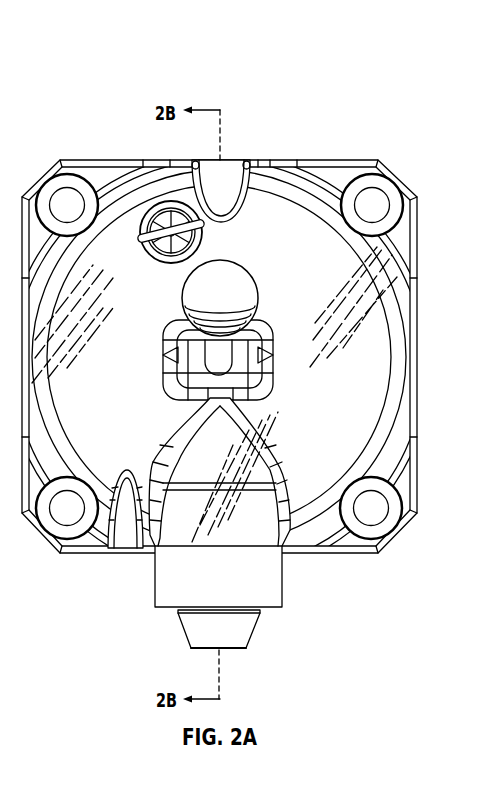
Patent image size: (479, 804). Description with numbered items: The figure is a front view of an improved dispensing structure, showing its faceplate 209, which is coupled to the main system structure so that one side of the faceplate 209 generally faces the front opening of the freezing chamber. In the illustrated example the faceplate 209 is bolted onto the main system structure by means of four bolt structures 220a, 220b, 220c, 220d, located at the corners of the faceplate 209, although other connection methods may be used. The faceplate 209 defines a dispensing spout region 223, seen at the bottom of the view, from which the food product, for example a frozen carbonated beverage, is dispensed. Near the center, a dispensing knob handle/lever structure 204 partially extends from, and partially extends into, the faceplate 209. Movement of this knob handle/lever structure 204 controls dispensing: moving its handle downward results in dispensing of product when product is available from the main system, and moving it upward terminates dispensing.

The faceplate 209 is at (256, 85).
The dispensing knob handle/lever structure 204 is at (259, 287).
The bolt structure 220a is at (61, 209).
The bolt structure 220b is at (375, 207).
The bolt structure 220c is at (57, 506).
The bolt structure 220d is at (383, 512).
The dispensing spout region 223 is at (270, 611).